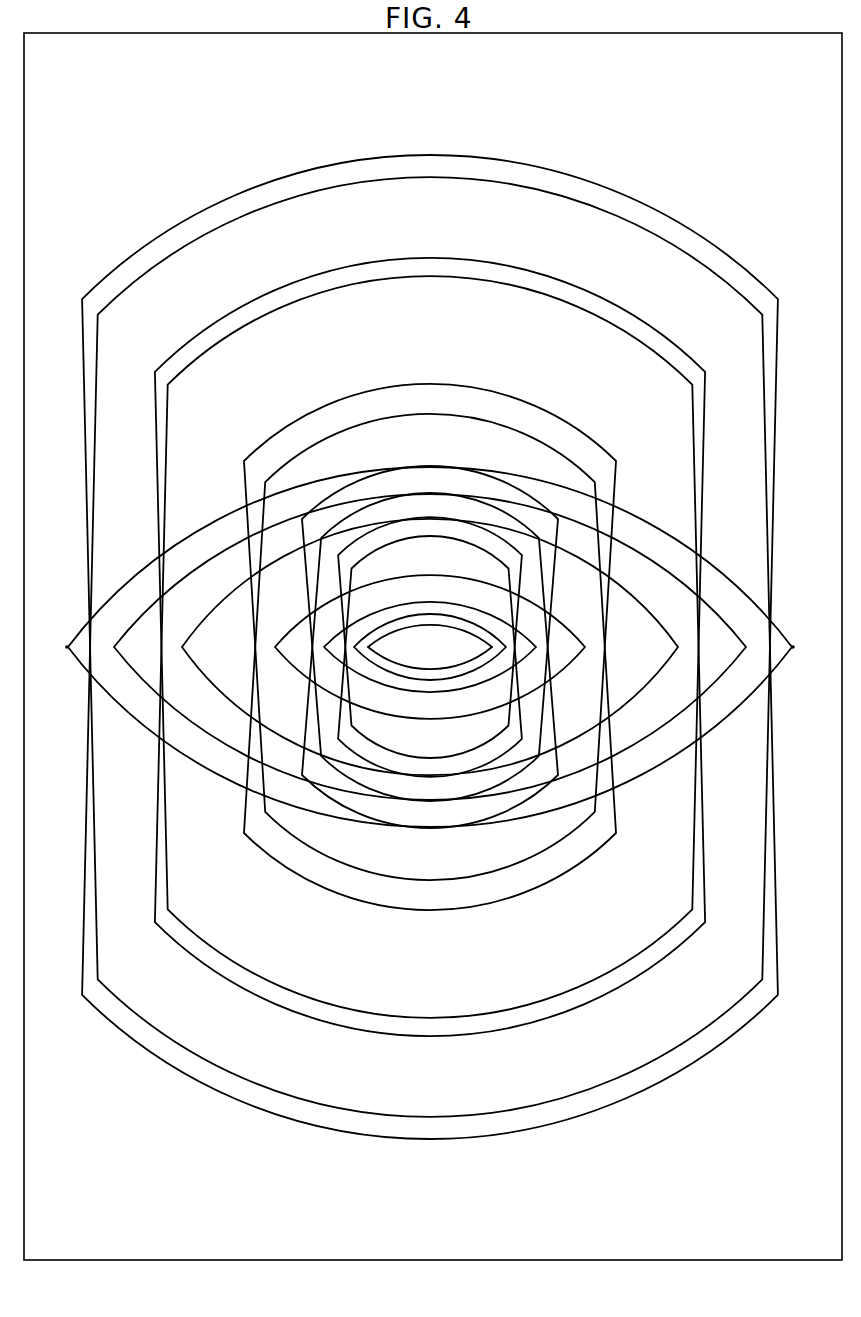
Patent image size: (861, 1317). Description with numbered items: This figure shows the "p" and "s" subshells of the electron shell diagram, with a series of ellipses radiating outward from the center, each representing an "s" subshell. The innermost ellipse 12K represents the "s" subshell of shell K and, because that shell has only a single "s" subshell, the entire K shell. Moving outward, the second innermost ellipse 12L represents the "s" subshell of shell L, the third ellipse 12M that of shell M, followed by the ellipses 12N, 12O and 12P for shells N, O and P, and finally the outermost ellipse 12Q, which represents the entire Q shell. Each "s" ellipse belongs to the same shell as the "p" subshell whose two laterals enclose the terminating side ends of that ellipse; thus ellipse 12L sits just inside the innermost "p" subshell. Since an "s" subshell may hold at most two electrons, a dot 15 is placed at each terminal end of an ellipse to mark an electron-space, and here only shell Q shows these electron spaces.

The "s" subshell ellipse of shell K 12K is at (430, 650).
The "s" subshell ellipse of shell L 12L is at (426, 646).
The "s" subshell ellipse of shell M 12M is at (430, 637).
The "s" subshell ellipse of shell N 12N is at (431, 647).
The "s" subshell ellipse of shell O 12O is at (430, 647).
The "s" subshell ellipse of shell P 12P is at (430, 647).
The "s" subshell ellipse of shell Q 12Q is at (430, 647).
The dot 15 is at (66, 648).